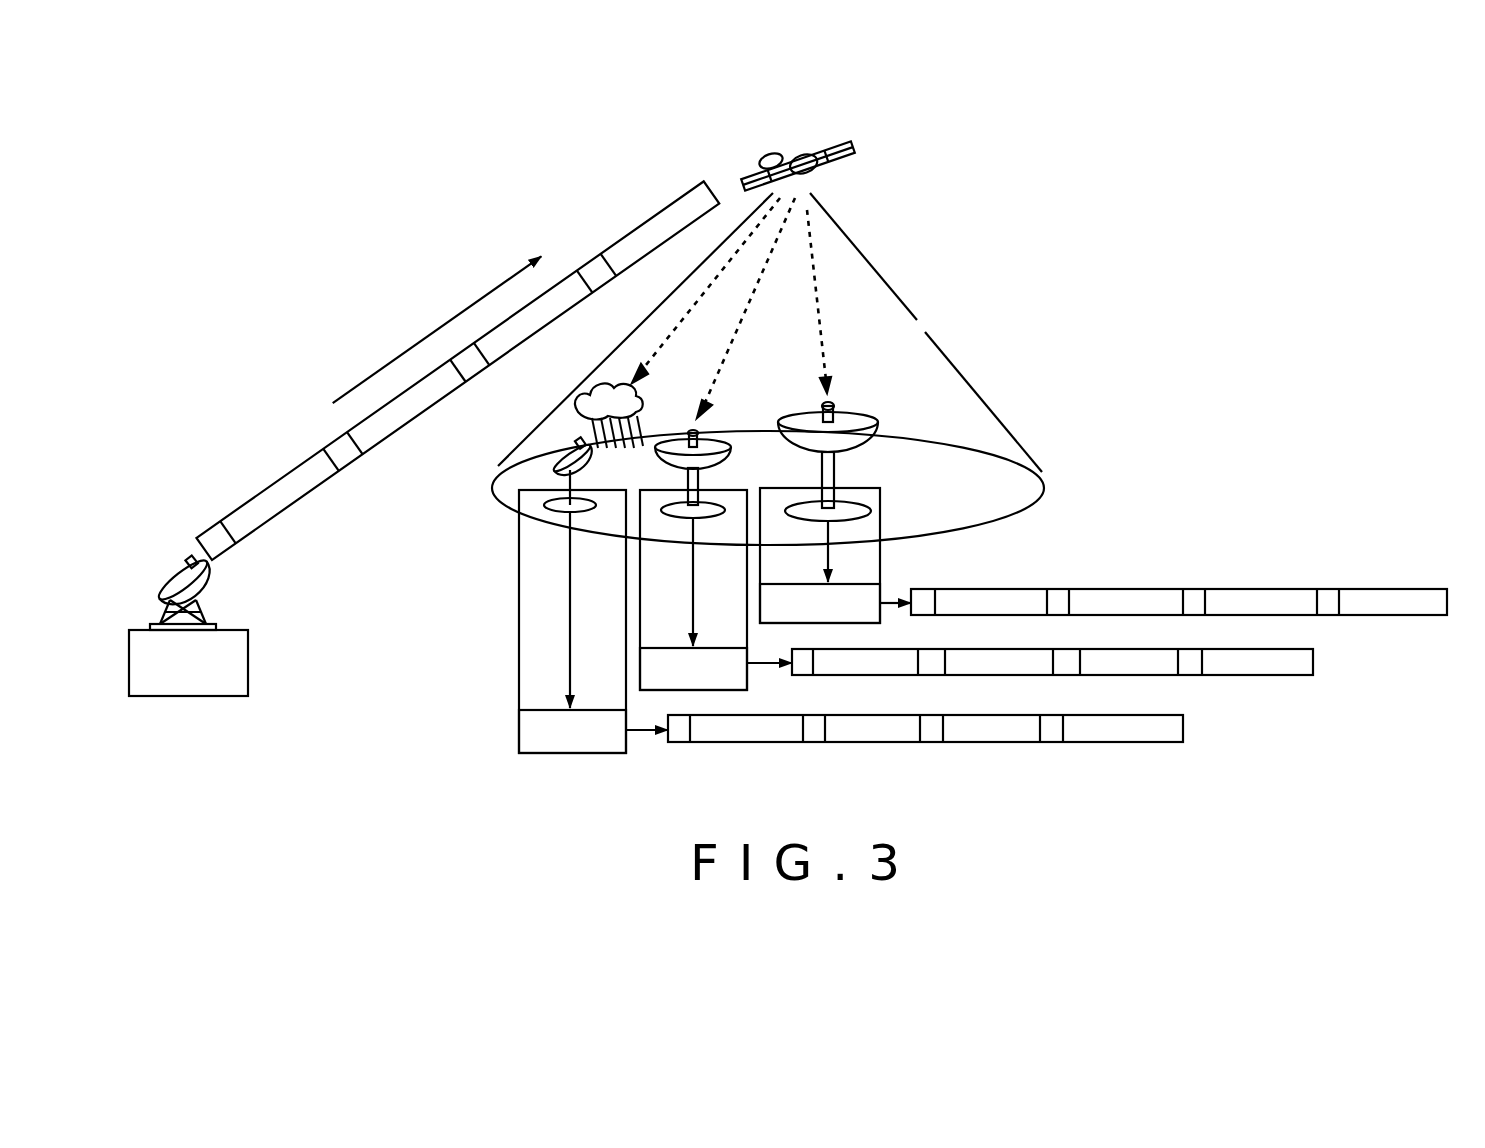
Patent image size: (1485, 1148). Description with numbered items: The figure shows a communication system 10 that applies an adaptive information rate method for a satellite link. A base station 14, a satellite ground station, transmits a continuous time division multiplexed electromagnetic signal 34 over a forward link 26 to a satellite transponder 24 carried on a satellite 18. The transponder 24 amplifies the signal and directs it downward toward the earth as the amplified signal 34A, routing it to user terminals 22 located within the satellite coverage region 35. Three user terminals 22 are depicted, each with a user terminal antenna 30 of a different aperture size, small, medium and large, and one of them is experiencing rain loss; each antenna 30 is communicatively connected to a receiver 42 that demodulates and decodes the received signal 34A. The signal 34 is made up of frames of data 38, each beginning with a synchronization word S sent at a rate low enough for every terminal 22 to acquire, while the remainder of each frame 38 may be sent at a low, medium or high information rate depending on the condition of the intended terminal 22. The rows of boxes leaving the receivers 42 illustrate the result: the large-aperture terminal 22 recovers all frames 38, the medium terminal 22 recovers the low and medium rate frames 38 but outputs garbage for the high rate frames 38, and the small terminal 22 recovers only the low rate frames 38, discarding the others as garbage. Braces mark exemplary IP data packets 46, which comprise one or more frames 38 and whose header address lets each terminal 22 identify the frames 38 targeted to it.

The communication system 10 is at (1032, 228).
The base station 14 is at (198, 696).
The satellite 18 is at (848, 145).
The user terminals 22 is at (745, 488).
The satellite transponder 24 is at (797, 162).
The forward link 26 is at (502, 278).
The user terminal antenna 30 is at (560, 452).
The TDM electromagnetic signal 34 is at (192, 550).
The amplified signal 34A is at (745, 318).
The coverage region 35 is at (1045, 490).
The frames of data 38 is at (272, 482).
The receiver 42 is at (880, 585).
The IP data packets 46 is at (672, 715).